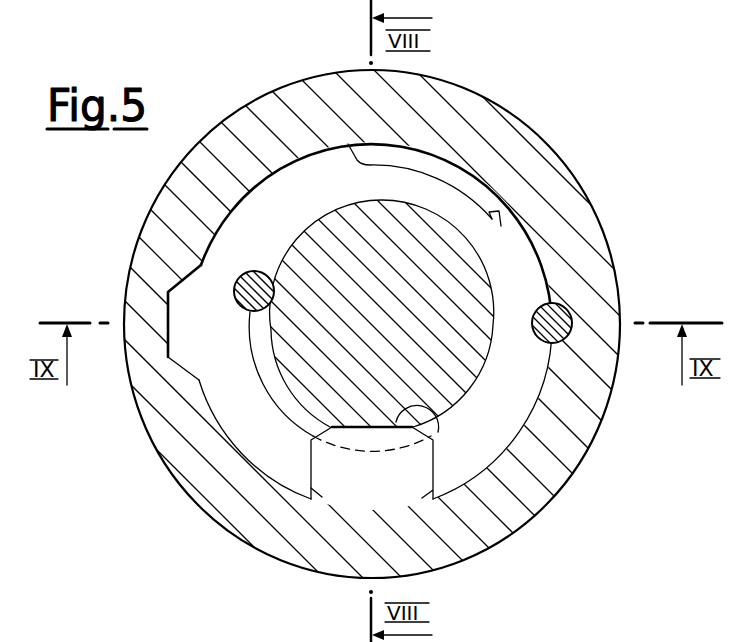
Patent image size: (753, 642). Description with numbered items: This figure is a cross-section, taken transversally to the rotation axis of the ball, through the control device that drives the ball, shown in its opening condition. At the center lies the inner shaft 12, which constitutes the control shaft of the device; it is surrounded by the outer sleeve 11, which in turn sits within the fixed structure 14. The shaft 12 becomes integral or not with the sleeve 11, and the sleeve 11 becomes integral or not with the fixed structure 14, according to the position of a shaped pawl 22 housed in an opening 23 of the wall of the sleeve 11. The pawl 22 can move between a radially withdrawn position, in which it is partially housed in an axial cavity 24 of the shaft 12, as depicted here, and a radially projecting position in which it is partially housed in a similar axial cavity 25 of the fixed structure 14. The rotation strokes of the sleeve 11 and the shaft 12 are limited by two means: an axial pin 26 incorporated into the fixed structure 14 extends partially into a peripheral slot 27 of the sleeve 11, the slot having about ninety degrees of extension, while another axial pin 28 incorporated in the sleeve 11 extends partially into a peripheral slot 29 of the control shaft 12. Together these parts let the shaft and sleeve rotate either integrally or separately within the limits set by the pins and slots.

The outer sleeve 11 is at (232, 413).
The inner shaft 12 is at (457, 362).
The fixed structure 14 is at (577, 218).
The shaped pawl 22 is at (352, 488).
The opening 23 is at (310, 492).
The axial cavity 24 is at (440, 424).
The axial cavity 25 is at (187, 288).
The axial pin 26 is at (560, 305).
The peripheral slot 27 is at (501, 226).
The axial pin 28 is at (255, 271).
The peripheral slot 29 is at (262, 343).